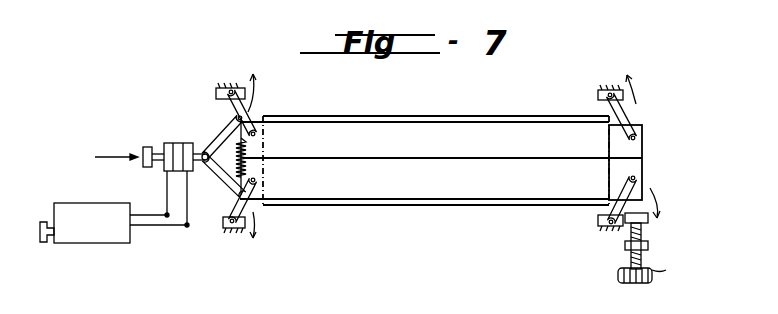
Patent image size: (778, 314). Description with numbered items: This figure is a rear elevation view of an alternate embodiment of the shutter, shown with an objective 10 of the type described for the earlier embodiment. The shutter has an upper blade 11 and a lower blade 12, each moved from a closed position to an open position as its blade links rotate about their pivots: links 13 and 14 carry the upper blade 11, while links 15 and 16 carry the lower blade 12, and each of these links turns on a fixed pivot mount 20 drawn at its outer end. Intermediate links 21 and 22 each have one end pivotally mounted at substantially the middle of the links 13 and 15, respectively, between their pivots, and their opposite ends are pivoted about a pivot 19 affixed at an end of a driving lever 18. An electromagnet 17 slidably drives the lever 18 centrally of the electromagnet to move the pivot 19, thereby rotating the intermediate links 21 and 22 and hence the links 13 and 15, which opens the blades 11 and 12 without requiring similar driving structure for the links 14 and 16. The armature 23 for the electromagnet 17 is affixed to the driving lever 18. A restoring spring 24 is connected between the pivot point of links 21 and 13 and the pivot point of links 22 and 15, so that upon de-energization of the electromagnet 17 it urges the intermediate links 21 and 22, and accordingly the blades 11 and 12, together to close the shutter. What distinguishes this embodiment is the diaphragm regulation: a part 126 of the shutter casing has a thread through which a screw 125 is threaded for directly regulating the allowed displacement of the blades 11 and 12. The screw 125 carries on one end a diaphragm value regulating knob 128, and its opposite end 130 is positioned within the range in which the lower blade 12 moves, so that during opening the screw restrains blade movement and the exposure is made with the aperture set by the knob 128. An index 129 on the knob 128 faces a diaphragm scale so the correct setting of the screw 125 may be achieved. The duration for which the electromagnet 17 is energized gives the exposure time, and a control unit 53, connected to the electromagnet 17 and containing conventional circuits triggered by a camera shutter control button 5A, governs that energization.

The control input connector 5A is at (38, 243).
The drum assembly 10 is at (522, 120).
The upper blade 11 is at (464, 128).
The lower blade 12 is at (506, 192).
The link 13 is at (228, 112).
The link 14 is at (636, 124).
The link 15 is at (248, 218).
The link 16 is at (638, 184).
The electromagnet 17 is at (166, 143).
The driving lever 18 is at (165, 172).
The pivot 19 is at (223, 180).
The pivot mount 20 is at (222, 93).
The intermediate link 21 is at (217, 133).
The intermediate link 22 is at (226, 190).
The armature 23 is at (143, 150).
The restoring spring 24 is at (247, 148).
The control unit 53 is at (100, 244).
The screw 125 is at (643, 232).
The part of the shutter casing 126 is at (650, 247).
The diaphragm value regulating knob 128 is at (641, 284).
The index 129 is at (666, 276).
The blade regulating end 130 is at (650, 220).